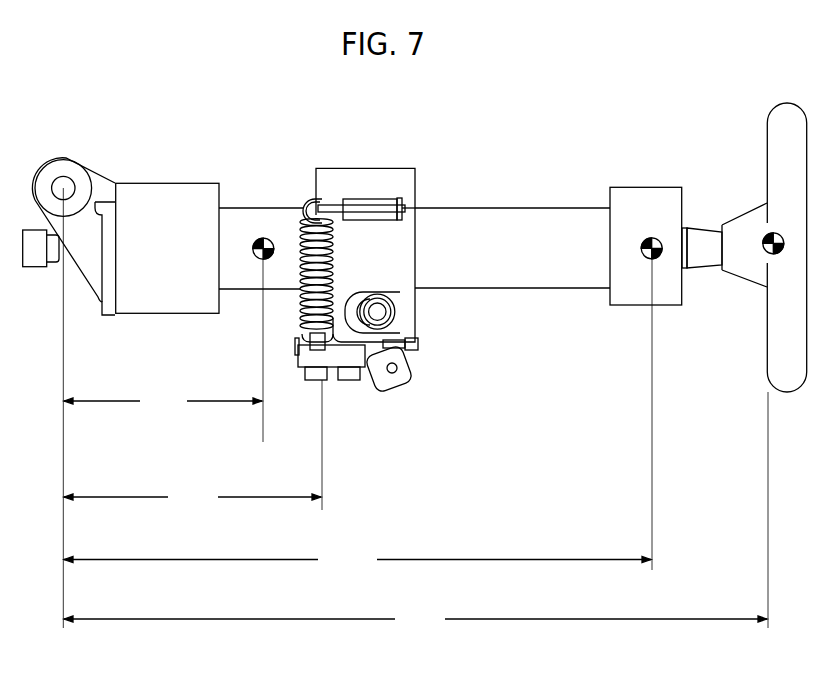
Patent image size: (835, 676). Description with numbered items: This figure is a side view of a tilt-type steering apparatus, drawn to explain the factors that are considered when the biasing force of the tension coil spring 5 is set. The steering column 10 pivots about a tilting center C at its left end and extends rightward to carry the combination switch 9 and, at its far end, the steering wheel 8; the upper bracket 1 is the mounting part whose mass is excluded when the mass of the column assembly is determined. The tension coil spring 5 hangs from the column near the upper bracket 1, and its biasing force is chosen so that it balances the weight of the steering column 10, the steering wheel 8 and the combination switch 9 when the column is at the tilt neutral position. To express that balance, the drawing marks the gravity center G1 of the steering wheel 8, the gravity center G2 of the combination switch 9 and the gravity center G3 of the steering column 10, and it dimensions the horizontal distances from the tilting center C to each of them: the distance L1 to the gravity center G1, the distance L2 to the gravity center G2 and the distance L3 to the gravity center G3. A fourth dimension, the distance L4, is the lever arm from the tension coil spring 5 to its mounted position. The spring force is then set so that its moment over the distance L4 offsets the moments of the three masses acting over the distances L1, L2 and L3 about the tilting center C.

The upper bracket 1 is at (383, 173).
The tension coil spring 5 is at (312, 201).
The steering wheel 8 is at (786, 133).
The combination switch 9 is at (655, 196).
The steering column 10 is at (515, 224).
The tilting center C is at (63, 187).
The gravity center of the steering wheel G1 is at (768, 250).
The gravity center of the combination switch G2 is at (645, 255).
The gravity center of the steering column G3 is at (260, 262).
The distance from the tilting center to the gravity center of the steering wheel L1 is at (415, 620).
The distance from the tilting center to the gravity center of the combination switch L2 is at (357, 560).
The distance from the tilting center to the gravity center of the steering column L3 is at (163, 404).
The distance from the springs to the mounted position L4 is at (192, 502).